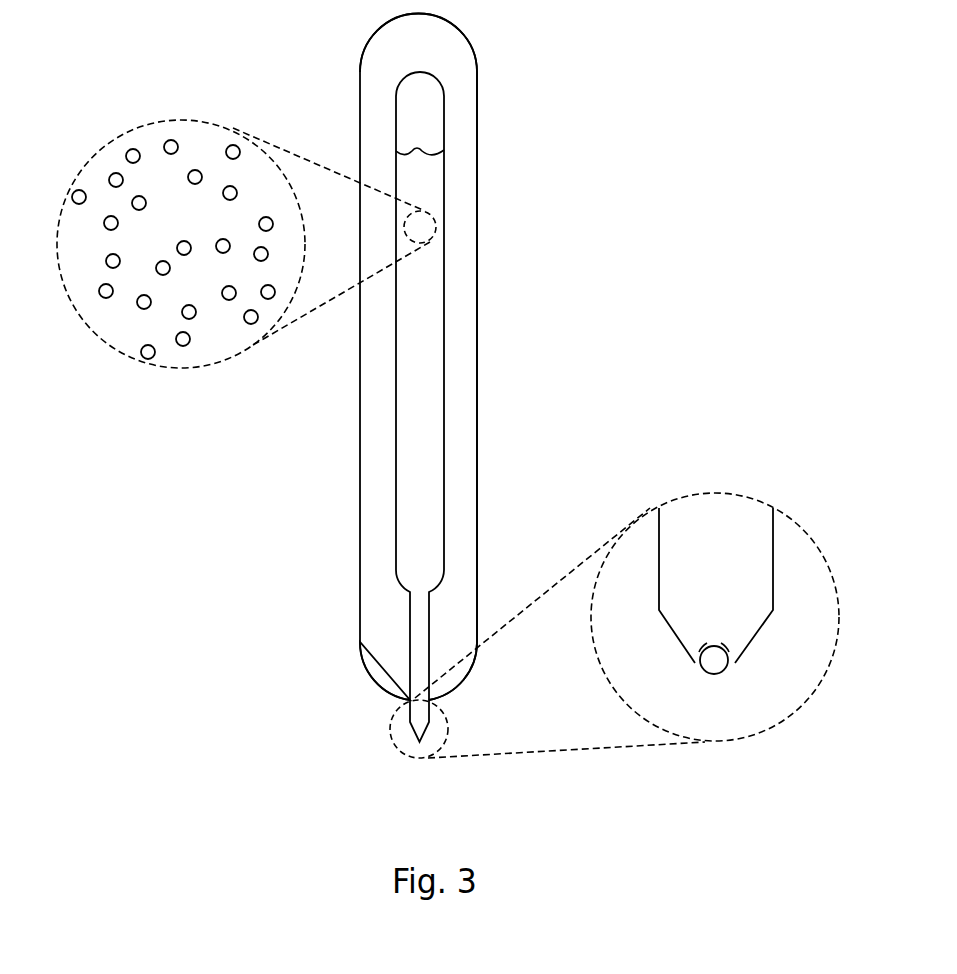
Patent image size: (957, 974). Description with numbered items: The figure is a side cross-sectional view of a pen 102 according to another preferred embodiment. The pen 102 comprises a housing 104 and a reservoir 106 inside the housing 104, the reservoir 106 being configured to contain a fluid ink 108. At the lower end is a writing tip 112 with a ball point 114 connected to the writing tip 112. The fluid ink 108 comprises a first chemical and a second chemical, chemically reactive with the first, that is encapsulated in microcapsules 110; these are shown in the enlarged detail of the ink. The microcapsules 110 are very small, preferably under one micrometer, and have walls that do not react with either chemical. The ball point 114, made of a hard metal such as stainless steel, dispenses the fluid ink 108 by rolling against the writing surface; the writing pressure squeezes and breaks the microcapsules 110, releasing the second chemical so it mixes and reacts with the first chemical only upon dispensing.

The pen 102 is at (540, 139).
The housing 104 is at (477, 255).
The reservoir 106 is at (445, 327).
The fluid ink 108 is at (123, 132).
The microcapsules 110 is at (139, 306).
The writing tip 112 is at (773, 550).
The ball point 114 is at (723, 673).